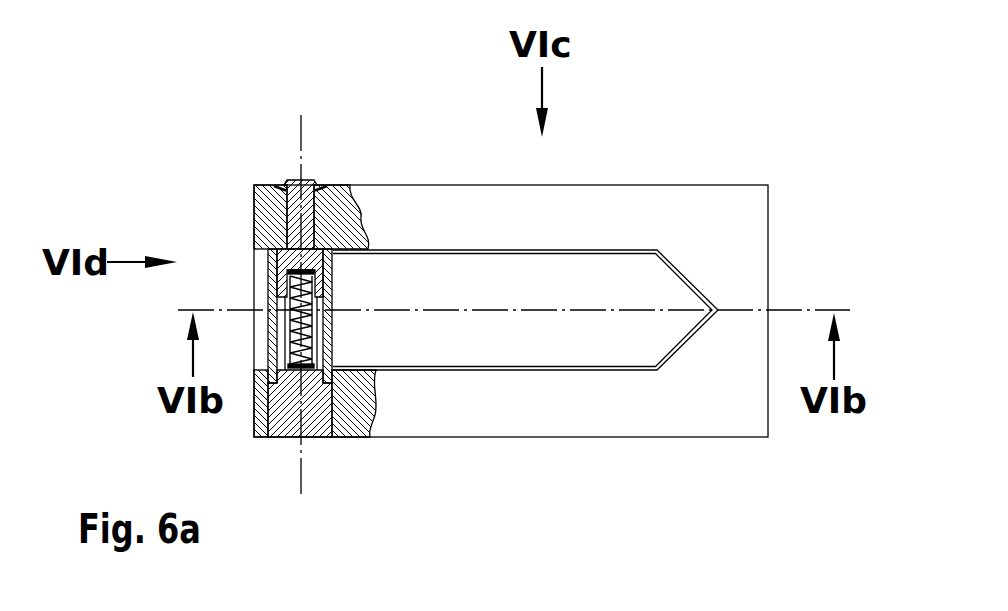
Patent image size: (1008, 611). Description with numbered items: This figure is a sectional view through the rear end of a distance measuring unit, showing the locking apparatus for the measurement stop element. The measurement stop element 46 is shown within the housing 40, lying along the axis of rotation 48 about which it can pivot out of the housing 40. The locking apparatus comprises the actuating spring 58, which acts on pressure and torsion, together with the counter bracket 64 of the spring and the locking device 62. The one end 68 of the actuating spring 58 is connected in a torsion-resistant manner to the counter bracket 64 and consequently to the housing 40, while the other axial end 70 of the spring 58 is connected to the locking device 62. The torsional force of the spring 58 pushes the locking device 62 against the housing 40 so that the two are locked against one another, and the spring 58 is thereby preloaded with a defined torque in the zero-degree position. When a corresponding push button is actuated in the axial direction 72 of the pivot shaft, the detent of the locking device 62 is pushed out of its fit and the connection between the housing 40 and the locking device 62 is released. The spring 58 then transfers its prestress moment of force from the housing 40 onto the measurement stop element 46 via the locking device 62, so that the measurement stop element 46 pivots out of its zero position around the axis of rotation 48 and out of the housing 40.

The housing 40 is at (520, 425).
The measurement stop element 46 is at (613, 340).
The axis of rotation 48 is at (300, 145).
The actuating spring 58 is at (264, 298).
The locking device 62 is at (285, 228).
The counter bracket 64 is at (317, 423).
The one end of the actuating spring 68 is at (254, 431).
The other axial end of the spring 70 is at (268, 263).
The axial direction 72 is at (301, 80).